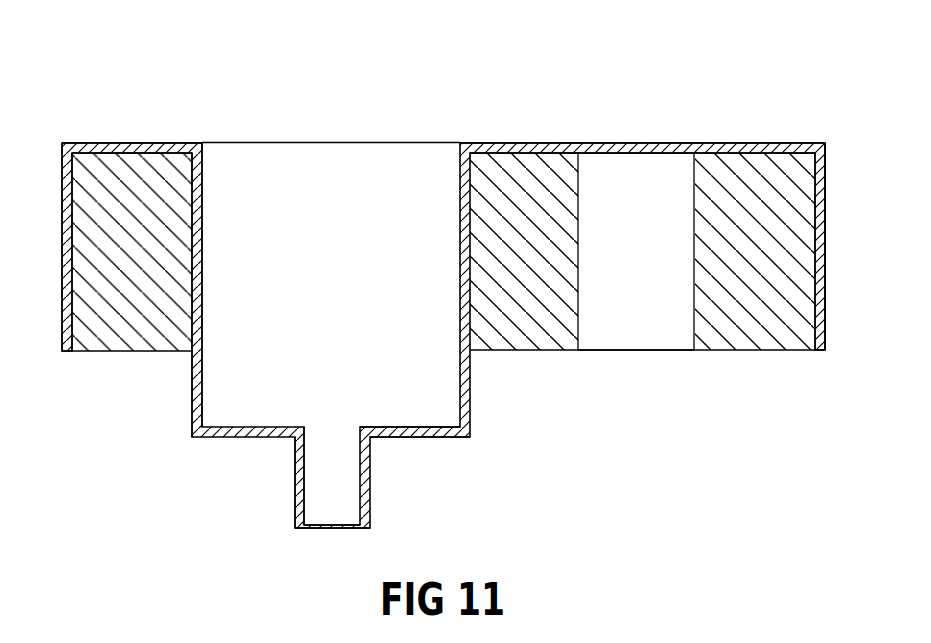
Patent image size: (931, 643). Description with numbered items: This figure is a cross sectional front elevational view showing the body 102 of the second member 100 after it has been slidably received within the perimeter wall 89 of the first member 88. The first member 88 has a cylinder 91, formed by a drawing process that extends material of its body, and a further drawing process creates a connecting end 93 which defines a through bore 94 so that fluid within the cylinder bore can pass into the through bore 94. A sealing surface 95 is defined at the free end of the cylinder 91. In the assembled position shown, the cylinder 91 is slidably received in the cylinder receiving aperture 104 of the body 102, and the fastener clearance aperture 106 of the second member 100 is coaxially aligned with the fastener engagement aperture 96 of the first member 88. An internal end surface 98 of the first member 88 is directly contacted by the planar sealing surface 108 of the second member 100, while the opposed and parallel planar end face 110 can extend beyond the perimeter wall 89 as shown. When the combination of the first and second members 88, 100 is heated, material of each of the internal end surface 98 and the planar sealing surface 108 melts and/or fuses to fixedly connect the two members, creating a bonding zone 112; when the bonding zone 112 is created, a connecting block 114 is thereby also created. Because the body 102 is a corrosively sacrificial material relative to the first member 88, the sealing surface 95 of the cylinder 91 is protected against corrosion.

The first member 88 is at (827, 332).
The perimeter wall 89 is at (823, 245).
The cylinder 91 is at (192, 395).
The connecting end 93 is at (297, 475).
The through bore 94 is at (332, 510).
The sealing surface 95 is at (422, 438).
The fastener engagement aperture 96 is at (690, 143).
The internal end surface 98 is at (564, 161).
The second member 100 is at (733, 349).
The body 102 is at (795, 298).
The cylinder receiving aperture 104 is at (193, 293).
The fastener clearance aperture 106 is at (638, 330).
The planar sealing surface 108 is at (132, 150).
The planar end face 110 is at (82, 353).
The bonding zone 112 is at (720, 145).
The connecting block 114 is at (797, 117).